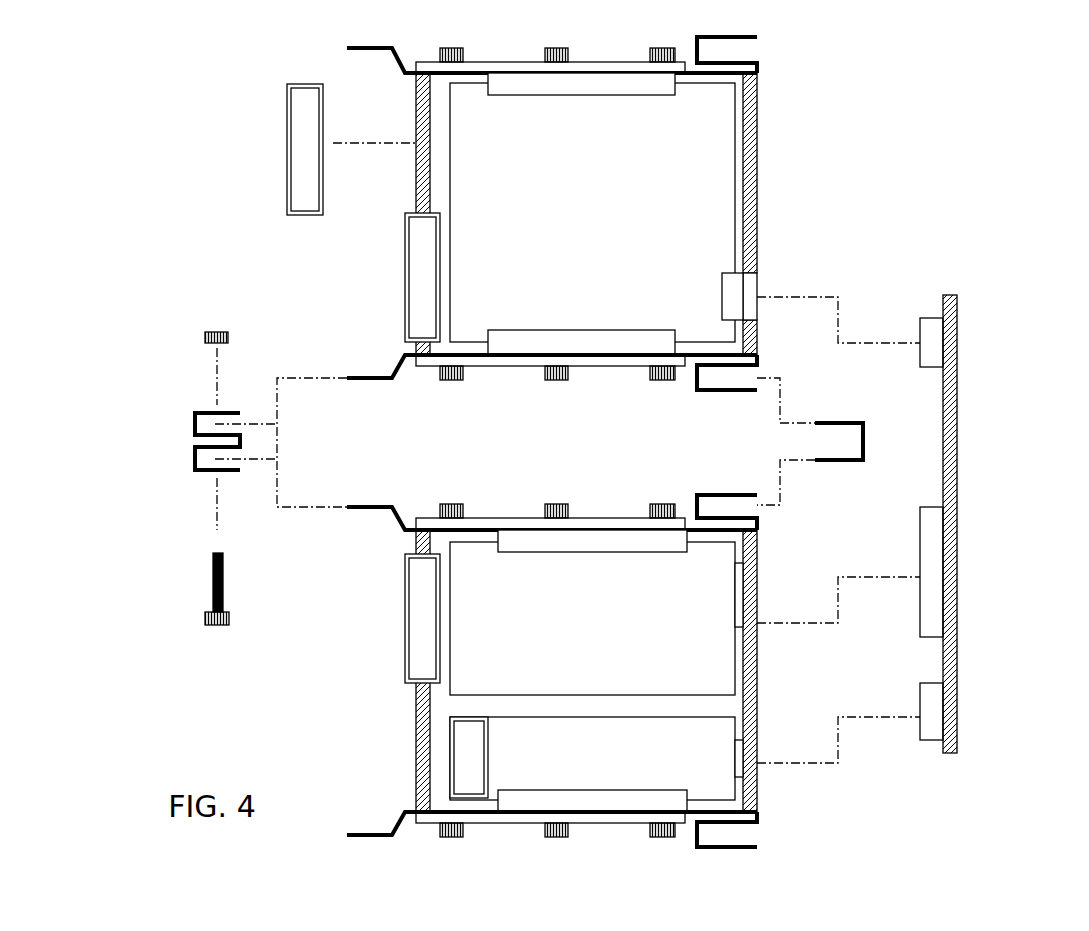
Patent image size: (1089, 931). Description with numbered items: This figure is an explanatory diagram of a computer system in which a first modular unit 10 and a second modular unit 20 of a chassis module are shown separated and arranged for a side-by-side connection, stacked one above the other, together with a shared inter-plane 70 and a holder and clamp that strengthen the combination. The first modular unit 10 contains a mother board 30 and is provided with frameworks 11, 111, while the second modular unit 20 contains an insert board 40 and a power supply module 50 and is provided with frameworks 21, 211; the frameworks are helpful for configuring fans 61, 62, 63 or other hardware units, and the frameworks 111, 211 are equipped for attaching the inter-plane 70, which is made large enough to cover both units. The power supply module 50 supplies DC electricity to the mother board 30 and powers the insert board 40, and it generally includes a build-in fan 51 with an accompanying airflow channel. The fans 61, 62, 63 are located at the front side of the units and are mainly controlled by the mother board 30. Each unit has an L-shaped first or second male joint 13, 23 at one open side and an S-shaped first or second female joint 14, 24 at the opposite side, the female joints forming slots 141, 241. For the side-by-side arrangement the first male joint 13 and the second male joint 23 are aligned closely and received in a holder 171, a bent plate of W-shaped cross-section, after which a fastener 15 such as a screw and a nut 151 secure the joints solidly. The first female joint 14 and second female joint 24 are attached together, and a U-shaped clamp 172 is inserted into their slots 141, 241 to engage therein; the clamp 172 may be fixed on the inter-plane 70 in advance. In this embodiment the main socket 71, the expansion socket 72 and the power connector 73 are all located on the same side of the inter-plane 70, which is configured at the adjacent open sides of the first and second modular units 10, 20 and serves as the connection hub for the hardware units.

The first modular unit 10 is at (806, 86).
The framework 11 is at (412, 184).
The framework 111 is at (759, 173).
The first male joint 13 is at (370, 376).
The first female joint 14 is at (728, 395).
The slot 141 is at (712, 378).
The fastener 15 is at (218, 627).
The nut 151 is at (222, 330).
The holder 171 is at (192, 427).
The clamp 172 is at (865, 423).
The second modular unit 20 is at (798, 558).
The framework 21 is at (412, 703).
The framework 211 is at (760, 687).
The second male joint 23 is at (370, 505).
The second female joint 24 is at (715, 485).
The slot 241 is at (710, 506).
The mother board 30 is at (628, 318).
The insert board 40 is at (628, 568).
The power supply module 50 is at (628, 775).
The build-in fan 51 is at (449, 728).
The fan 61 is at (286, 102).
The fan 62 is at (404, 256).
The fan 63 is at (404, 577).
The inter-plane 70 is at (957, 408).
The main socket 71 is at (925, 316).
The expansion socket 72 is at (925, 505).
The power connector 73 is at (932, 742).